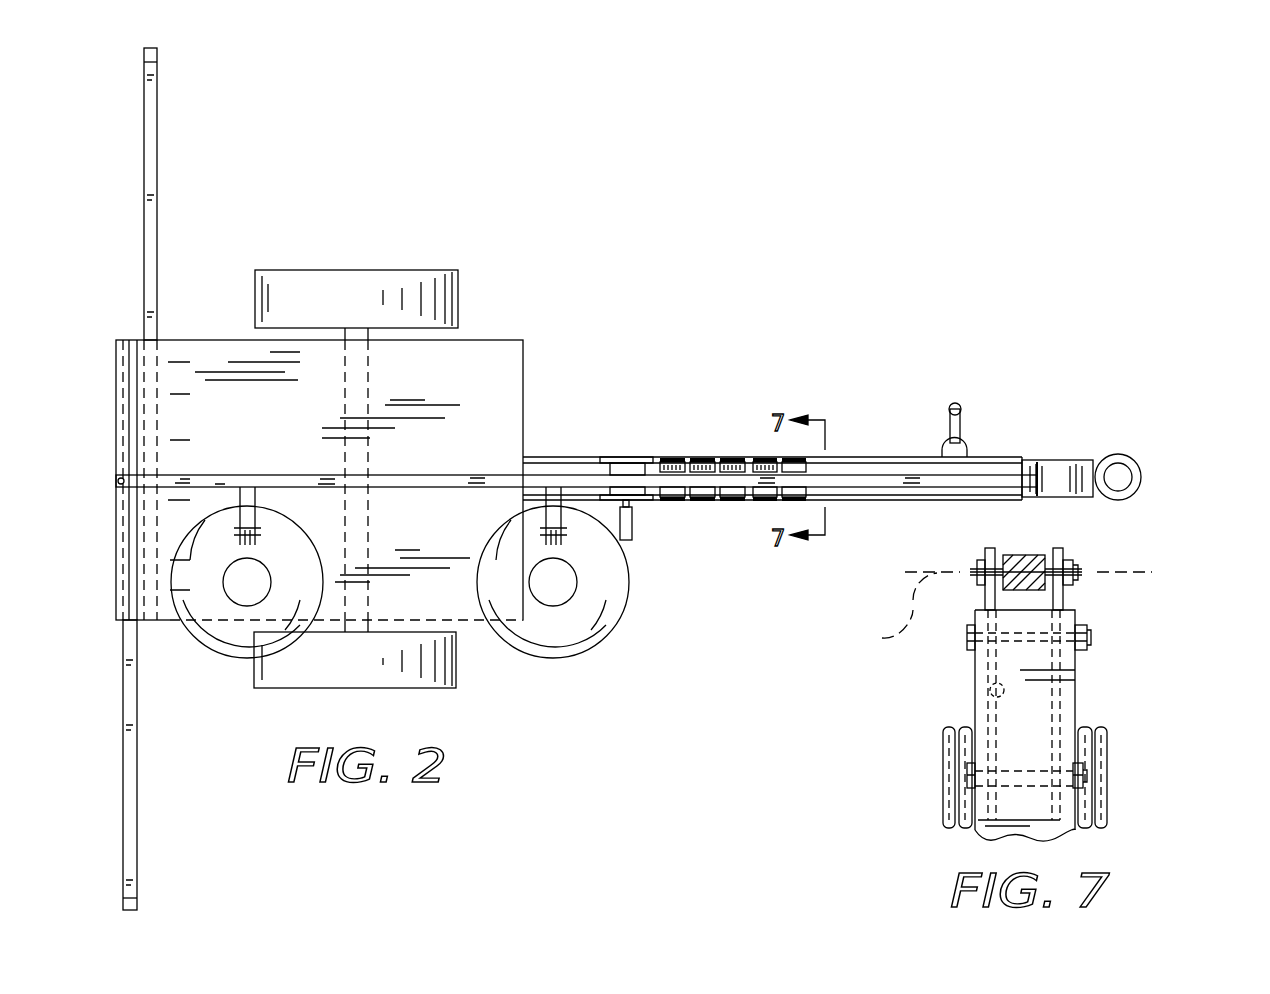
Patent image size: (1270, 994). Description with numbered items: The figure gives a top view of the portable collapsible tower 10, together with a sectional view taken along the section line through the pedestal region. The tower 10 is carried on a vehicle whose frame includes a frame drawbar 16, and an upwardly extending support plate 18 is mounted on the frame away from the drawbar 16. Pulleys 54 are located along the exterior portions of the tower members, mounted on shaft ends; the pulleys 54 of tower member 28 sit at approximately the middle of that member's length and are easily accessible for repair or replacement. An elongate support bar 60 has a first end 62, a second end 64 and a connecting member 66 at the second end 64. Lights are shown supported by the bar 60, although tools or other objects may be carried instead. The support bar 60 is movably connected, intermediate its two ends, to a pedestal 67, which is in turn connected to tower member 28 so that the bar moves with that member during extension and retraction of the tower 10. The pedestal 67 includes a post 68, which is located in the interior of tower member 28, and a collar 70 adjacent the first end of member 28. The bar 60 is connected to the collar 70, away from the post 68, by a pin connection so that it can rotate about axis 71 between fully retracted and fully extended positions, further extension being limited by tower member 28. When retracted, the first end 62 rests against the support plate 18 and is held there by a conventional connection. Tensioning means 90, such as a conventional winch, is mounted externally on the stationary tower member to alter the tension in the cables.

In FIG. 2, the portable collapsible tower 10 is at (898, 270).
In FIG. 2, the frame drawbar 16 is at (1070, 462).
In FIG. 2, the upwardly extending support plate 18 is at (116, 368).
In FIG. 7, the tower member 28 is at (1075, 695).
In FIG. 2, the pulleys 54 is at (750, 500).
In FIG. 7, the pulleys 54 is at (1107, 775).
In FIG. 7, the elongate support bar 60 is at (1023, 553).
In FIG. 2, the first end 62 is at (116, 482).
In FIG. 2, the second end 64 is at (1030, 460).
In FIG. 2, the connecting member 66 is at (1030, 470).
In FIG. 7, the pedestal 67 is at (1088, 592).
In FIG. 7, the post 68 is at (985, 691).
In FIG. 7, the collar 70 is at (988, 552).
In FIG. 7, the axis 71 is at (998, 615).
In FIG. 2, the tensioning means 90 is at (623, 459).